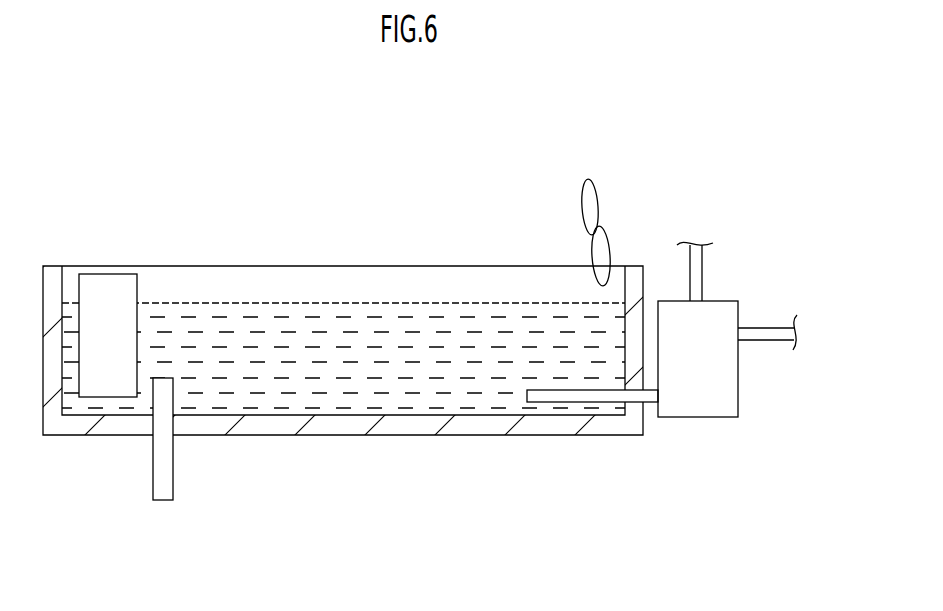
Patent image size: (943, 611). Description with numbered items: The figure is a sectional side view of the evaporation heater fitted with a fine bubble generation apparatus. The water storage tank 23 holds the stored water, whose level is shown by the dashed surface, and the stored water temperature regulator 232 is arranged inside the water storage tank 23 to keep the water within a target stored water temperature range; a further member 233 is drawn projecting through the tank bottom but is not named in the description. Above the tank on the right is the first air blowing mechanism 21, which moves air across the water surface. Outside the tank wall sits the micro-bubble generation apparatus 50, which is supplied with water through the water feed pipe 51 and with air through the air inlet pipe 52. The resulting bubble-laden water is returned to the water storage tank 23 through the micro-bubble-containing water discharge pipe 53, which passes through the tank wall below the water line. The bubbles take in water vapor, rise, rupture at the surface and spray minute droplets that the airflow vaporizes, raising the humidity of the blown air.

The water storage tank 23 is at (433, 430).
The stored water temperature regulator 232 is at (107, 305).
The support rod 233 is at (163, 477).
The first air blowing mechanism 21 is at (597, 186).
The micro-bubble generation apparatus 50 is at (707, 392).
The water feed pipe 51 is at (777, 343).
The air inlet pipe 52 is at (703, 264).
The micro-bubble-containing water discharge pipe 53 is at (573, 395).